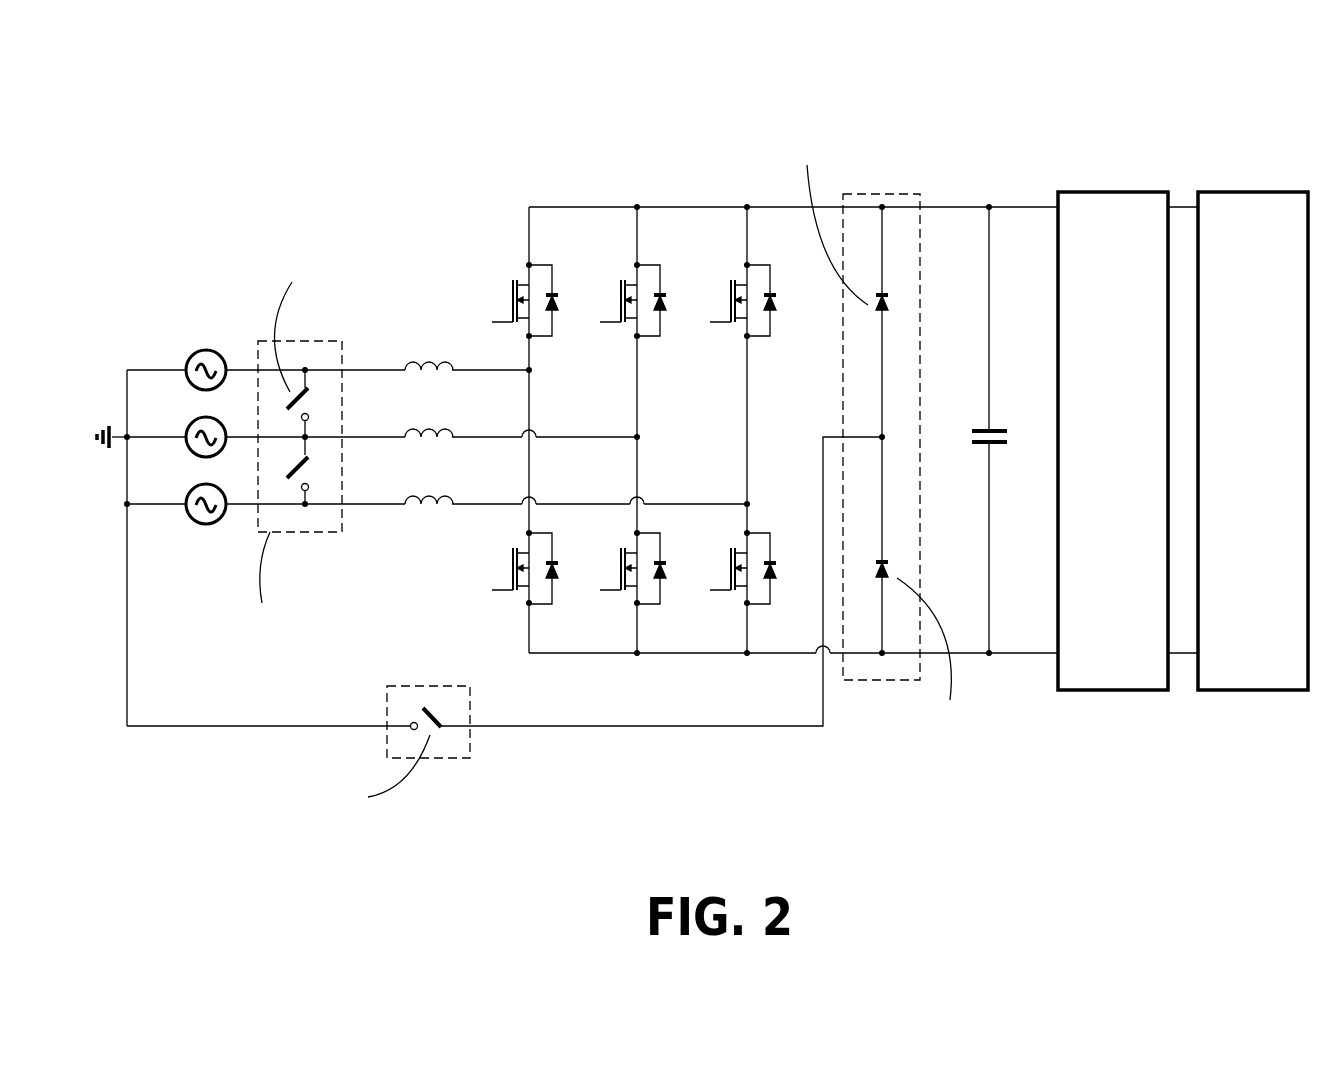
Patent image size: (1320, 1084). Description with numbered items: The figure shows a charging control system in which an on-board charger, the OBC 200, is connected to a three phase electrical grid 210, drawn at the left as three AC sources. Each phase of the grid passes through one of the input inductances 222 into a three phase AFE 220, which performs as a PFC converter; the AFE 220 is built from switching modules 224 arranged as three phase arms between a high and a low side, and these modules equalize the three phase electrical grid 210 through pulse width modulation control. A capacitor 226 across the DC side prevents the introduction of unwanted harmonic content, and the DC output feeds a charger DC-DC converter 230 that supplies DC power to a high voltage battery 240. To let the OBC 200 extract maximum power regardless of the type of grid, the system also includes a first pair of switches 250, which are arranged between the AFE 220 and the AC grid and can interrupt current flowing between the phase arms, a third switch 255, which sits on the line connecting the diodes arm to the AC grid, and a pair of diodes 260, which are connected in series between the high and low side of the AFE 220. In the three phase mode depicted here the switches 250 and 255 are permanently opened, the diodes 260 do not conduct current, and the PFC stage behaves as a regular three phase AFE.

The OBC 200 is at (298, 212).
The three phase electrical grid 210 is at (198, 340).
The three phase AFE 220 is at (825, 363).
The input inductances 222 is at (427, 352).
The switching modules 224 is at (651, 262).
The capacitor 226 is at (977, 427).
The charger DC-DC converter 230 is at (1097, 192).
The high voltage battery 240 is at (1253, 192).
The switches SW1, SW2 250 is at (329, 532).
The switch SW3 255 is at (452, 760).
The diodes D1 and D2 260 is at (883, 683).